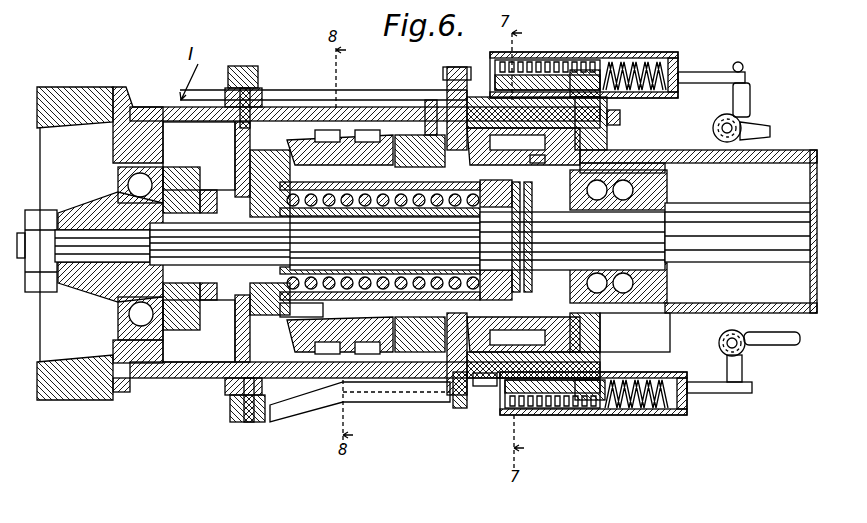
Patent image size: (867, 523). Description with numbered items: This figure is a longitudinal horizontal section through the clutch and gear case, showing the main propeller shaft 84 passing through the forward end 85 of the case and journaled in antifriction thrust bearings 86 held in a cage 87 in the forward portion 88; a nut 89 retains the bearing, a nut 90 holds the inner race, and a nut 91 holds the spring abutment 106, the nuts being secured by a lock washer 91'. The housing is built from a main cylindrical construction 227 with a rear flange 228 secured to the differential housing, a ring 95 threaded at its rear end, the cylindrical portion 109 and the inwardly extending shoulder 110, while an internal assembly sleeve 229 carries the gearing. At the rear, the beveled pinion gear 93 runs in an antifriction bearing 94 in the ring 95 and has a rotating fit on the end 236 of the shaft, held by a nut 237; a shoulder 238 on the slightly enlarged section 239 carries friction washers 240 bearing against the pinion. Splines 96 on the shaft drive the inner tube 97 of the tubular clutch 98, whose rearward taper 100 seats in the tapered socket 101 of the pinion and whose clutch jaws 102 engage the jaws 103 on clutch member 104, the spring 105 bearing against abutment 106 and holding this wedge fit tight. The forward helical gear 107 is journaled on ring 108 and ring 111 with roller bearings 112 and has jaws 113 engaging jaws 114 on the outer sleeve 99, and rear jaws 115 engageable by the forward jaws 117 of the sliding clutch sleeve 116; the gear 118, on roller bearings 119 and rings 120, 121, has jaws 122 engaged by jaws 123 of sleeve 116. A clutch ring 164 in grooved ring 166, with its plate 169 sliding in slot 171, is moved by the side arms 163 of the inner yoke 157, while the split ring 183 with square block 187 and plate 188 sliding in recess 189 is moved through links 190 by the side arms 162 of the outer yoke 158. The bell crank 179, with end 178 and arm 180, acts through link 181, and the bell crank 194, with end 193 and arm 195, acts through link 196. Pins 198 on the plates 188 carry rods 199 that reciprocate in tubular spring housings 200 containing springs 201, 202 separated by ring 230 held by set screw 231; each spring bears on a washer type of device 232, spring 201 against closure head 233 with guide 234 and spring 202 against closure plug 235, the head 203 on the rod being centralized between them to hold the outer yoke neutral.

The flange 228 is at (123, 100).
The ring 95 is at (118, 142).
The friction washers 240 is at (118, 345).
The antifriction bearing 94 is at (118, 180).
The clutch jaws 103 is at (160, 322).
The beveled pinion gear 93 is at (93, 207).
The end of the propeller shaft 236 is at (117, 287).
The nut 237 is at (100, 252).
The slightly enlarged section 239 is at (360, 241).
The main propeller shaft 84 is at (765, 215).
The splines 96 is at (298, 190).
The nut 91 is at (541, 237).
The lock washer 91' is at (528, 234).
The side arms 162 is at (236, 68).
The side arms 163 is at (233, 96).
The clutch ring 164 is at (233, 108).
The ring 120 is at (293, 89).
The main cylindrical construction 227 is at (306, 100).
The link 196 is at (318, 90).
The assembly sleeve 229 is at (350, 135).
The gear 118 is at (362, 135).
The clutch jaws 122 is at (345, 138).
The ring 121 is at (385, 128).
The roller bearings 112 is at (450, 120).
The pins 198 is at (458, 68).
The ring 111 is at (475, 145).
The forward helical gear 107 is at (528, 67).
The cylindrical portion 109 is at (582, 62).
The ring 108 is at (590, 70).
The tubular spring housings 200 is at (650, 56).
The bell crank 194 is at (755, 114).
The downwardly depending end 193 is at (762, 130).
The arm 195 is at (724, 98).
The inwardly extending shoulder 110 is at (621, 118).
The nut 89 is at (602, 155).
The antifriction thrust bearings 86 is at (648, 170).
The cage 87 is at (663, 158).
The forward end 85 is at (775, 157).
The forward portion 88 is at (673, 305).
The tapered socket 101 is at (186, 200).
The rearward taper 100 is at (196, 195).
The clutch member 104 is at (209, 186).
The clutch jaws 117 is at (411, 150).
The clutch jaws 114 is at (537, 163).
The spring 105 is at (328, 312).
The nut 90 is at (533, 285).
The spring abutment 106 is at (510, 289).
The clutch jaws 113 is at (535, 300).
The split ring 183 is at (420, 334).
The clutch jaws 115 is at (457, 354).
The shoulder 238 is at (170, 298).
The clutch jaws 102 is at (196, 305).
The inner tube 97 is at (236, 315).
The grooved ring 166 is at (240, 340).
The tubular clutch 98 is at (290, 334).
The plate 169 is at (225, 385).
The inner yoke 157 is at (226, 403).
The outer yoke 158 is at (238, 432).
The slot 171 is at (250, 425).
The roller bearings 119 is at (287, 405).
The links 190 is at (323, 402).
The clutch jaws 123 is at (360, 355).
The outer sleeve 99 is at (387, 358).
The sliding clutch sleeve 116 is at (410, 360).
The square block 187 is at (455, 378).
The plate 188 is at (460, 380).
The link 181 is at (450, 400).
The rods 199 is at (478, 390).
The closure head 233 is at (497, 407).
The guide 234 is at (510, 412).
The spring 201 is at (553, 408).
The washer type of device 232 is at (575, 410).
The set screw 231 is at (598, 415).
The ring 230 is at (600, 405).
The closure plug 235 is at (690, 405).
The bell crank 179 is at (756, 372).
The arm 180 is at (730, 364).
The downwardly extending end 178 is at (790, 345).
The head 203 is at (605, 390).
The spring 202 is at (650, 372).
The recess 189 is at (485, 379).